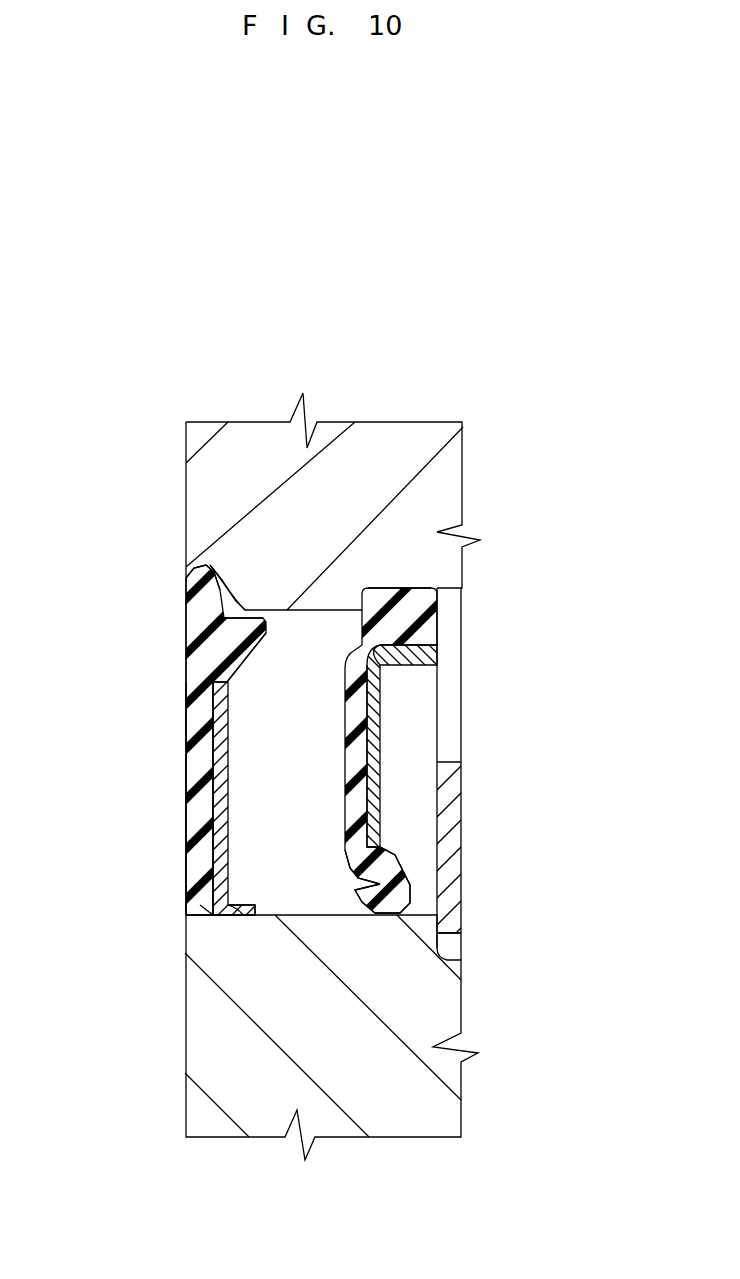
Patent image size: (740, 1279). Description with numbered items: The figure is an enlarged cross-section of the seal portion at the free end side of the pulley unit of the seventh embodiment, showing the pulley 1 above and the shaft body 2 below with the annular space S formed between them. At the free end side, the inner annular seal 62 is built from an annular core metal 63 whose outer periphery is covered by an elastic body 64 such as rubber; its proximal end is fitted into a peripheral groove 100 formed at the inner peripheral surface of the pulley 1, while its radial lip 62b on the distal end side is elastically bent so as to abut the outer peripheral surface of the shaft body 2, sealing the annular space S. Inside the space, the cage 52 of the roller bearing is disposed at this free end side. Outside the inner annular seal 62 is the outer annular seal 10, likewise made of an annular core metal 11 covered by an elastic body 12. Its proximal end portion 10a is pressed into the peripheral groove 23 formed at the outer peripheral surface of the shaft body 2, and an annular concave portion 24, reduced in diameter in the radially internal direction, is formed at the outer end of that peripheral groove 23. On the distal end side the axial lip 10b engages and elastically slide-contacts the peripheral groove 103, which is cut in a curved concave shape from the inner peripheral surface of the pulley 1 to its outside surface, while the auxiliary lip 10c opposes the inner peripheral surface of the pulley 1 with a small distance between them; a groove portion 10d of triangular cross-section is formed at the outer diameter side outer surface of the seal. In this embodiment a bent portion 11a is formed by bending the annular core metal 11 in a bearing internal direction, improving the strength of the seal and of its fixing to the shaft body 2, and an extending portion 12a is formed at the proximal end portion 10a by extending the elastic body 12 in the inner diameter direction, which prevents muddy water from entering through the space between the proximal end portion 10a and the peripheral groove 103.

The pulley 1 is at (393, 447).
The shaft body 2 is at (442, 1013).
The outer annular seal 10 is at (186, 727).
The proximal end portion 10a is at (192, 923).
The axial lip 10b is at (192, 603).
The auxiliary lip 10c is at (267, 627).
The groove portion 10d is at (203, 637).
The annular core metal 11 is at (230, 832).
The bent portion 11a is at (243, 925).
The elastic body 12 is at (190, 812).
The extending portion 12a is at (197, 925).
The peripheral groove 23 is at (240, 923).
The annular concave portion 24 is at (237, 922).
The cage 52 is at (453, 809).
The inner annular seal 62 is at (377, 590).
The radial lip 62b is at (368, 900).
The annular core metal 63 is at (380, 712).
The elastic body 64 is at (410, 622).
The peripheral groove 100 is at (418, 590).
The peripheral groove 103 is at (228, 587).
The annular space S is at (312, 650).